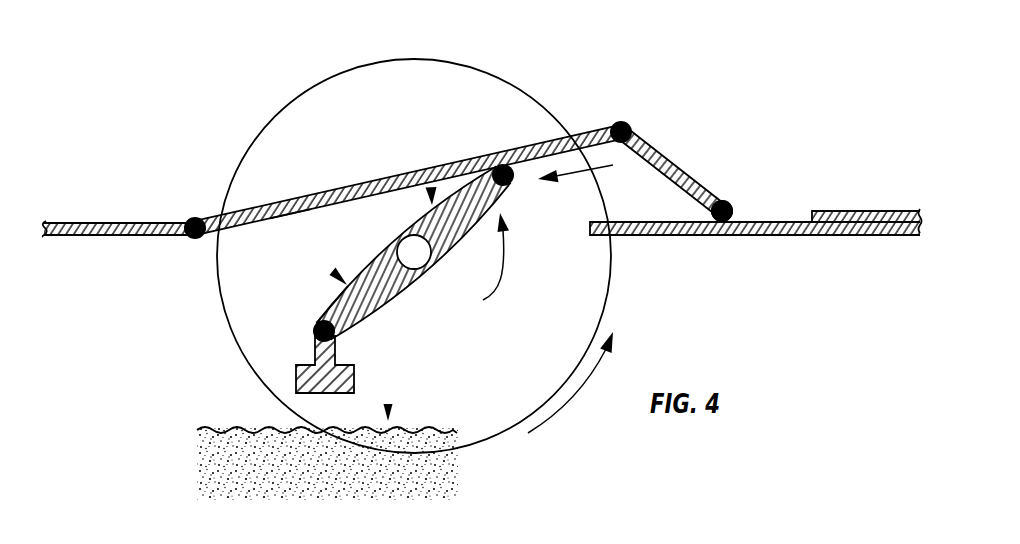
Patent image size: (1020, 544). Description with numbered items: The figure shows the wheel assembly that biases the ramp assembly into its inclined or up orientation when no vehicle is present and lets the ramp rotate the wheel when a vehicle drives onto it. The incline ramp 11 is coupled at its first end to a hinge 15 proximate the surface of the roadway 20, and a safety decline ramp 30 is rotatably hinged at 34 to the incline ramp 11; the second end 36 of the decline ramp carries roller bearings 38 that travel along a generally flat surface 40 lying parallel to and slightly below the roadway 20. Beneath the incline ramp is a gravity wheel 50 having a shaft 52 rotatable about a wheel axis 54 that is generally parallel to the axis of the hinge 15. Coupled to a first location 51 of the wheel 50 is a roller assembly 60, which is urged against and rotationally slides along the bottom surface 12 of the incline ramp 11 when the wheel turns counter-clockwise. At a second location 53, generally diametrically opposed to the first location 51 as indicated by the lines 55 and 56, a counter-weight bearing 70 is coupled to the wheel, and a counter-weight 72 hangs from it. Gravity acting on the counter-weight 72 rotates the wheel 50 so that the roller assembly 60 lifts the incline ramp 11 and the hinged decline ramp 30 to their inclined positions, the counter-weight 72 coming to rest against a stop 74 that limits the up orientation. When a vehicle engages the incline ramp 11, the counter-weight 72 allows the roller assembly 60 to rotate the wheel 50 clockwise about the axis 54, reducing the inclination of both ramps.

The incline ramp 11 is at (345, 187).
The bottom surface 12 is at (290, 214).
The hinge 15 is at (195, 240).
The roadway 20 is at (93, 222).
The safety decline ramp 30 is at (672, 163).
The hinge 34 is at (623, 127).
The second end 36 is at (730, 206).
The roller bearings 38 is at (726, 204).
The generally flat surface 40 is at (810, 234).
The gravity wheel 50 is at (610, 287).
The first location 51 is at (492, 198).
The shaft 52 is at (426, 270).
The second location 53 is at (334, 305).
The wheel axis 54 is at (413, 252).
The line 55 is at (338, 274).
The line 56 is at (431, 190).
The roller assembly 60 is at (542, 174).
The counter-weight bearing 70 is at (318, 322).
The counter-weight 72 is at (296, 378).
The stop 74 is at (388, 406).